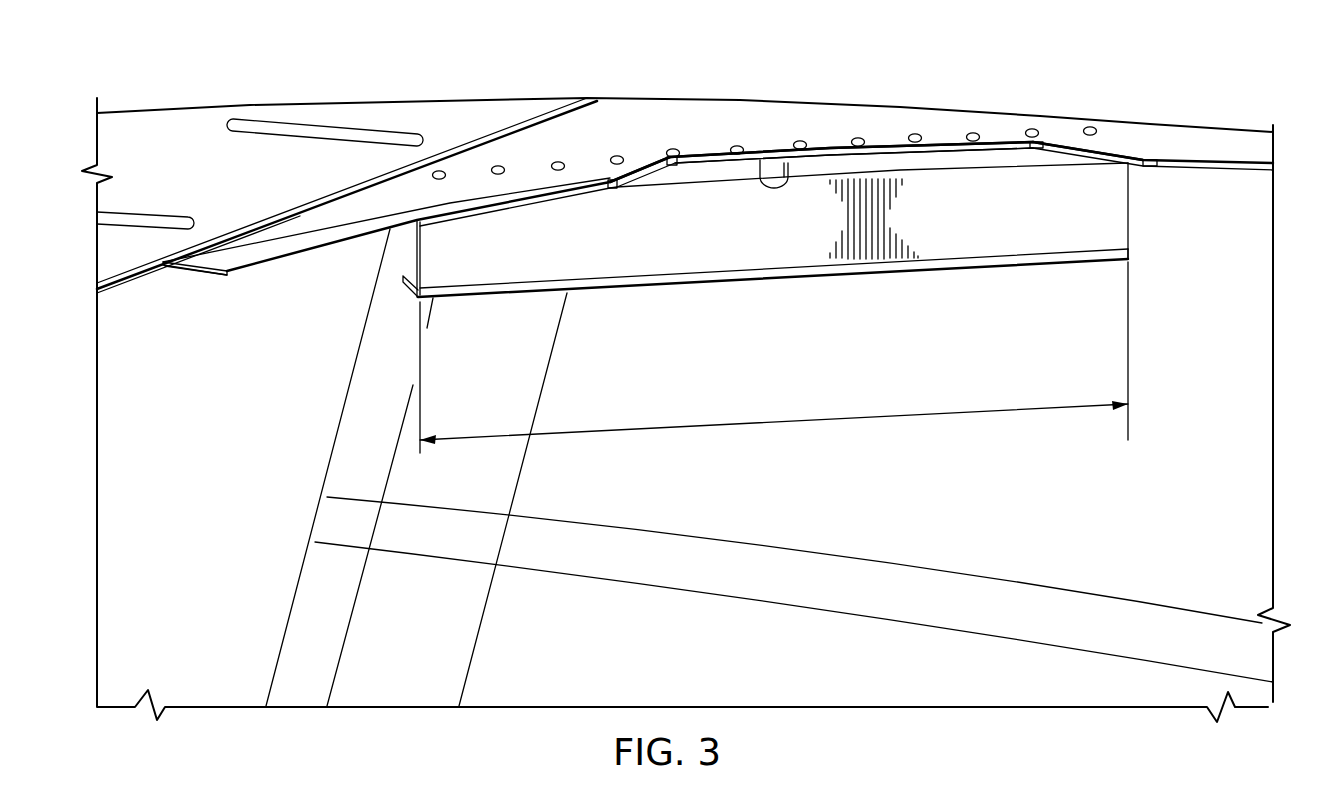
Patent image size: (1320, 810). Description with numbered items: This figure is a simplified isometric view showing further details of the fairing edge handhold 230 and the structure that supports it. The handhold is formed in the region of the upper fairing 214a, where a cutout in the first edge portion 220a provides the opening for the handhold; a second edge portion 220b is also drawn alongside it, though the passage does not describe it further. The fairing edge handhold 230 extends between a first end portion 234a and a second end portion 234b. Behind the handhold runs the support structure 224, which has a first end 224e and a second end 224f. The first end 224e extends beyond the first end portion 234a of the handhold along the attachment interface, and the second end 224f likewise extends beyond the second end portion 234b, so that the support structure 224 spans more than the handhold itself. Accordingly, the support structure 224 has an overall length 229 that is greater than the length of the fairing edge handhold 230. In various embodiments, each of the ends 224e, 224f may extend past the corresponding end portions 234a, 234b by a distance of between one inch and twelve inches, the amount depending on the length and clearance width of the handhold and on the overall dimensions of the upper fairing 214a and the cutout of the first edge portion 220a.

The fairing edge handhold 230 is at (847, 86).
The upper fairing 214a is at (1185, 148).
The first edge portion 220a is at (513, 203).
The second flange portion of doubler strip 220b is at (948, 154).
The first end portion 234a is at (653, 174).
The second end portion 234b is at (1068, 157).
The support structure 224 is at (777, 307).
The first end 224e is at (413, 251).
The second end 224f is at (1130, 228).
The overall length 229 is at (773, 425).